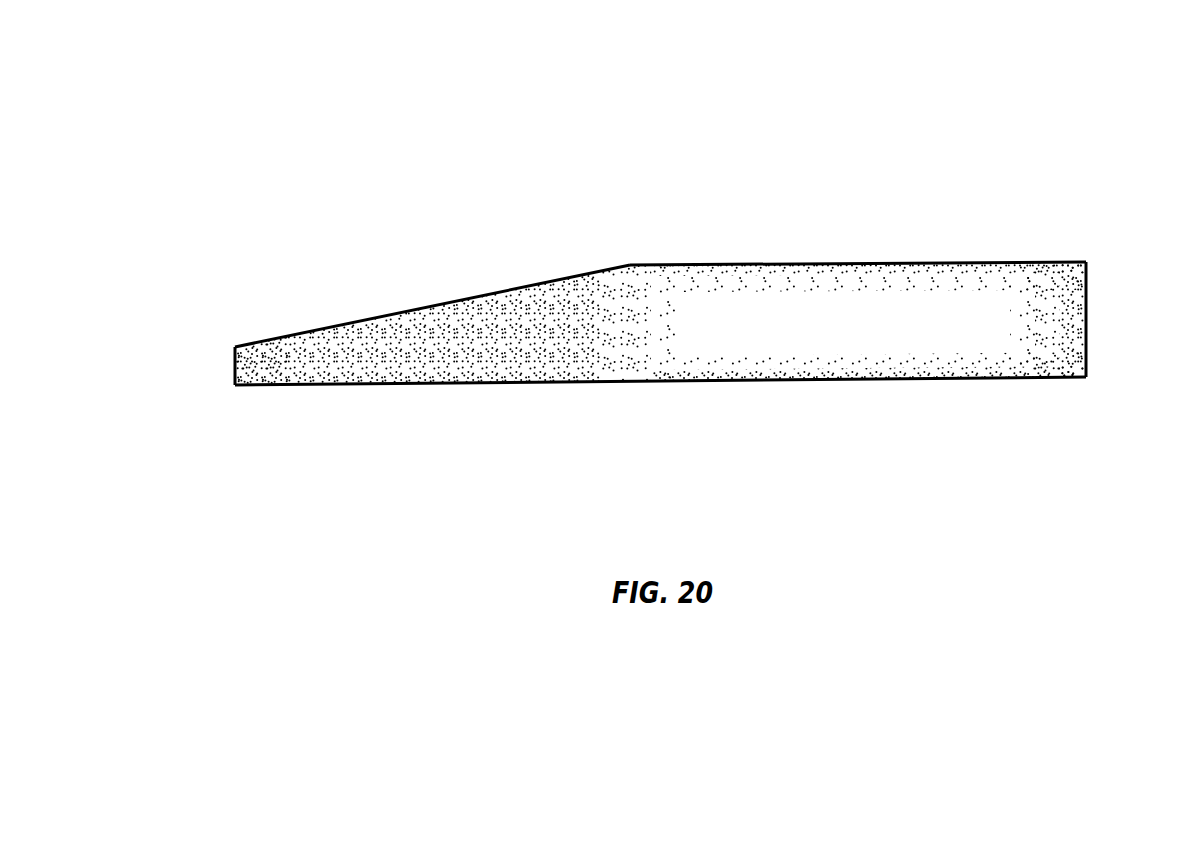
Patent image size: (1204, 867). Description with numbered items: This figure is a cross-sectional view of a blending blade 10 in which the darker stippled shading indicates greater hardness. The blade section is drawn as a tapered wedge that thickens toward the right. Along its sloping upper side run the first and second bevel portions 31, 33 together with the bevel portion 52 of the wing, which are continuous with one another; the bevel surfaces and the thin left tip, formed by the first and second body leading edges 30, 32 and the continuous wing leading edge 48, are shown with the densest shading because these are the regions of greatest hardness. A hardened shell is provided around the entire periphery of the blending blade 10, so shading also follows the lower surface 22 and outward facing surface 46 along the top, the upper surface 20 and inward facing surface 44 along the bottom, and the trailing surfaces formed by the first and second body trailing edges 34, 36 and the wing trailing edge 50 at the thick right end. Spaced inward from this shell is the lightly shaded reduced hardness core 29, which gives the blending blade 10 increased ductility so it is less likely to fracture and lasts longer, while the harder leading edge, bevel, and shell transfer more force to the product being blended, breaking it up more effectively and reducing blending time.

The blending blade 10 is at (661, 236).
The upper surface 20 is at (660, 408).
The inward facing surface 44 is at (805, 380).
The lower surface 22 is at (858, 227).
The outward facing surface 46 is at (816, 262).
The reduced hardness core 29 is at (900, 315).
The first body leading edge 30 is at (178, 374).
The second body leading edge 32 is at (178, 374).
The wing leading edge 48 is at (235, 368).
The first bevel portion 31 is at (432, 286).
The second bevel portion 33 is at (432, 286).
The bevel portion 52 is at (444, 302).
The first body trailing edge 34 is at (1143, 319).
The second body trailing edge 36 is at (1143, 319).
The wing trailing edge 50 is at (1087, 318).